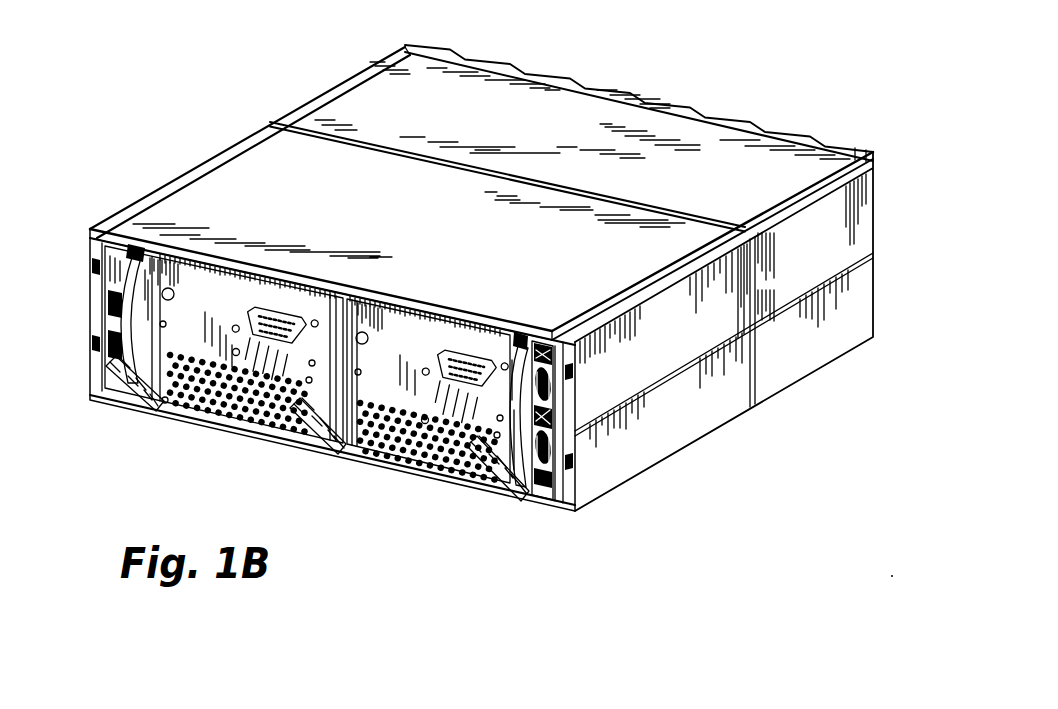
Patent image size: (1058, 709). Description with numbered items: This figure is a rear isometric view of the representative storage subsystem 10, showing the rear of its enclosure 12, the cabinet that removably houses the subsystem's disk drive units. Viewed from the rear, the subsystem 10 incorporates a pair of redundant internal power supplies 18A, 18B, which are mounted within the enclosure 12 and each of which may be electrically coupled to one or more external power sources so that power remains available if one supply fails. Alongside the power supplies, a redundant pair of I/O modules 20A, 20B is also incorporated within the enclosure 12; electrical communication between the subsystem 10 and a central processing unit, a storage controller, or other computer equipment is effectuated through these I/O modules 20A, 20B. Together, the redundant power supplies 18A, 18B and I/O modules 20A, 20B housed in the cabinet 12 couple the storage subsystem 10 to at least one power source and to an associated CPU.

The storage subsystem 10 is at (716, 492).
The enclosure 12 is at (228, 178).
The internal power supply 18A is at (238, 297).
The internal power supply 18B is at (424, 342).
The I/O module 20A is at (103, 380).
The I/O module 20B is at (553, 487).